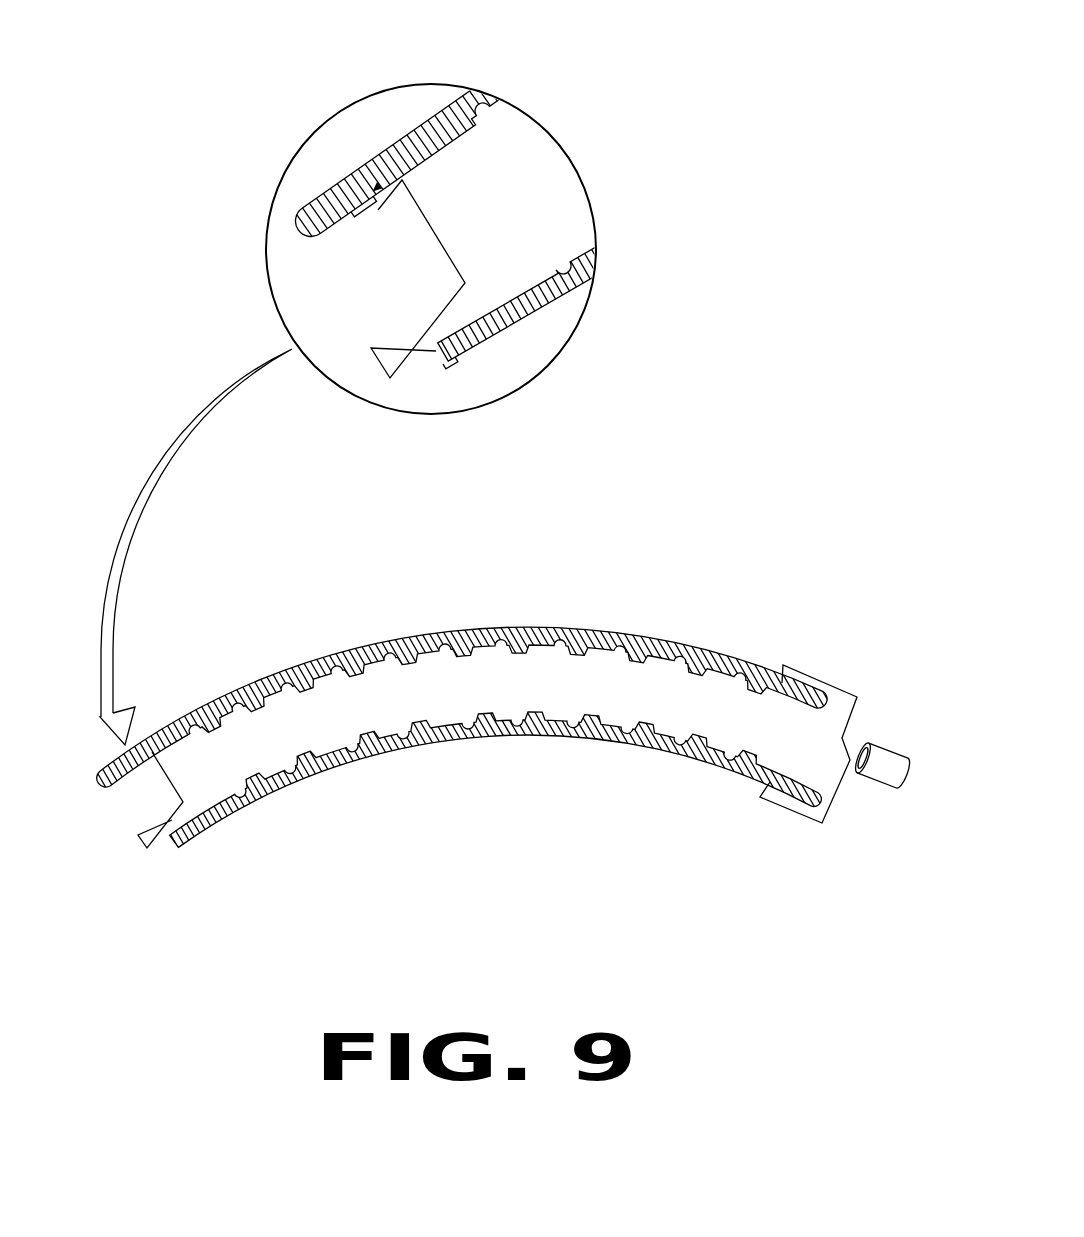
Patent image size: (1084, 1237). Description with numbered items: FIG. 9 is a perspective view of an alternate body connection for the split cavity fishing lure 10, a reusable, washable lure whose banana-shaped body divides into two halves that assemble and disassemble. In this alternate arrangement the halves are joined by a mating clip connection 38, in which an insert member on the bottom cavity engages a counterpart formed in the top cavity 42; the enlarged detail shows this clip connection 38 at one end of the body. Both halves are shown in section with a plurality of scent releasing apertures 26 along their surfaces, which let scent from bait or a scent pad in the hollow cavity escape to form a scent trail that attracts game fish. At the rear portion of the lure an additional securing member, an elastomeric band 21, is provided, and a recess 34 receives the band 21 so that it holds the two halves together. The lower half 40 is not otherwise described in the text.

The split cavity fishing lure 10 is at (702, 398).
The band 21 is at (893, 750).
The scent releasing apertures 26 is at (392, 658).
The recess 34 is at (760, 762).
The mating clip connection 38 is at (437, 350).
The lower rail 40 is at (598, 277).
The top cavity 42 is at (470, 100).